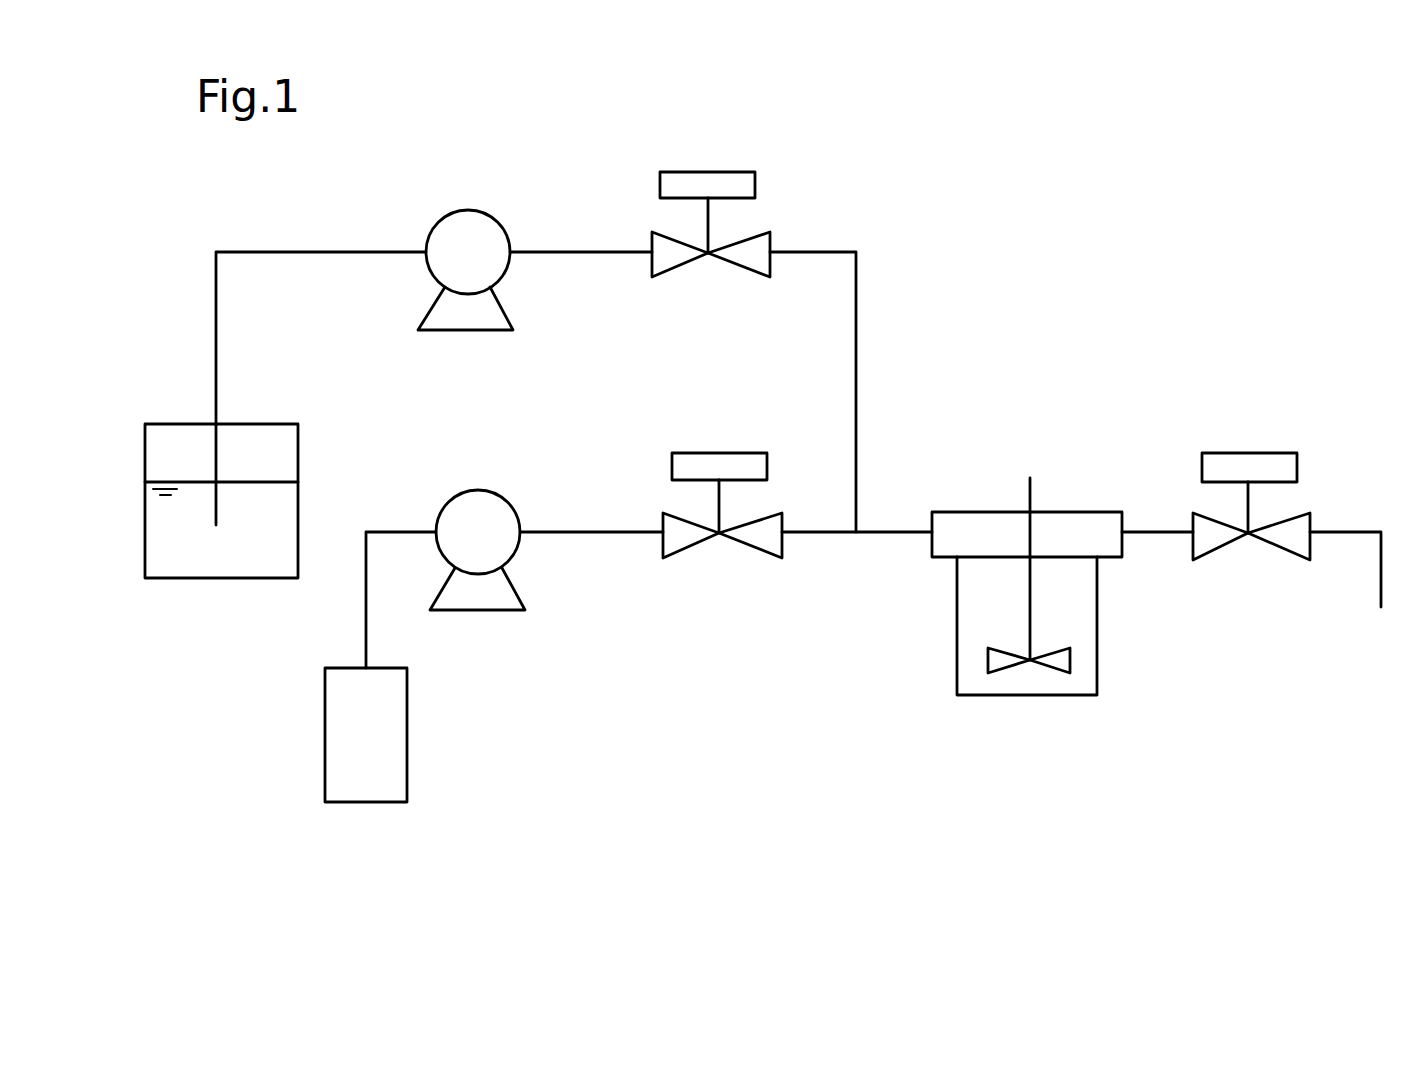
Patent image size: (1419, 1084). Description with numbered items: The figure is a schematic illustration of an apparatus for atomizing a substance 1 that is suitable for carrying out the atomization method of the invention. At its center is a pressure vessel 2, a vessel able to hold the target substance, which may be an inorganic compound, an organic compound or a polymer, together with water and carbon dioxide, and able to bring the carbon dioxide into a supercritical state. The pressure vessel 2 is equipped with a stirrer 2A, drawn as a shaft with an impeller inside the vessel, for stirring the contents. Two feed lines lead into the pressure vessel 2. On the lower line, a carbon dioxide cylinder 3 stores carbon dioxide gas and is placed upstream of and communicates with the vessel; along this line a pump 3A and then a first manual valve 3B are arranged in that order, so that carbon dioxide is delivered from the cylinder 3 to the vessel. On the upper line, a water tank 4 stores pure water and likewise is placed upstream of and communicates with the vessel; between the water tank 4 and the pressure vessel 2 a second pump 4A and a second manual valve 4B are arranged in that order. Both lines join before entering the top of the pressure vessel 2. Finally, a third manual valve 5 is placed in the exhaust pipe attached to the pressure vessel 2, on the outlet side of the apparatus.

The apparatus for atomizing a substance 1 is at (995, 303).
The pressure vessel 2 is at (955, 678).
The stirrer 2A is at (1028, 623).
The carbon dioxide cylinder 3 is at (392, 802).
The pump 3A is at (490, 588).
The first manual valve 3B is at (753, 540).
The water tank 4 is at (200, 578).
The second pump 4A is at (458, 235).
The second manual valve 4B is at (695, 187).
The third manual valve 5 is at (1273, 465).